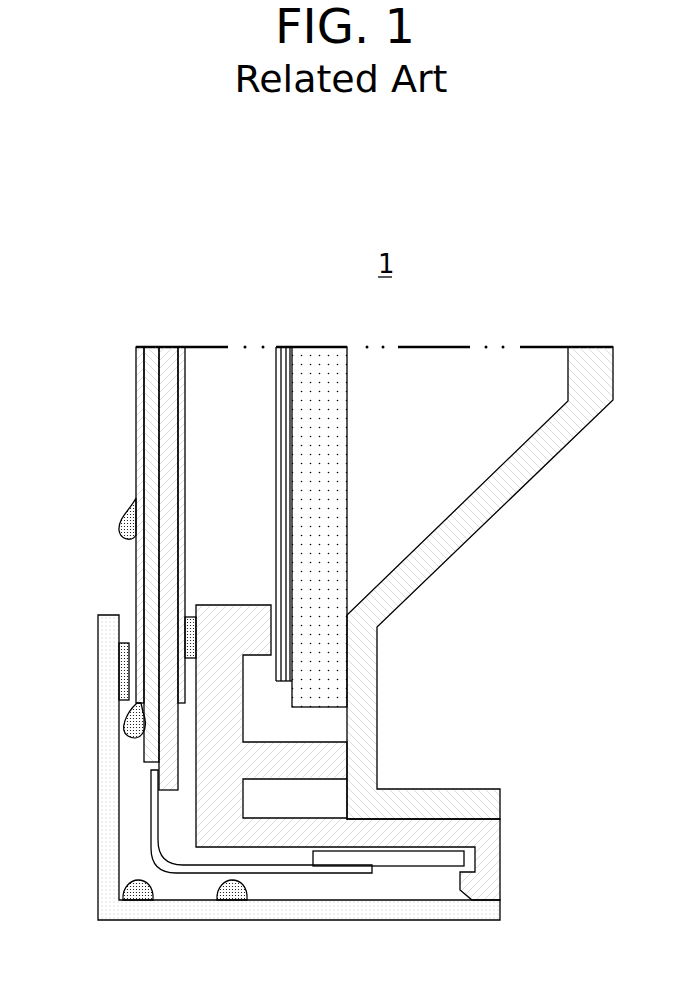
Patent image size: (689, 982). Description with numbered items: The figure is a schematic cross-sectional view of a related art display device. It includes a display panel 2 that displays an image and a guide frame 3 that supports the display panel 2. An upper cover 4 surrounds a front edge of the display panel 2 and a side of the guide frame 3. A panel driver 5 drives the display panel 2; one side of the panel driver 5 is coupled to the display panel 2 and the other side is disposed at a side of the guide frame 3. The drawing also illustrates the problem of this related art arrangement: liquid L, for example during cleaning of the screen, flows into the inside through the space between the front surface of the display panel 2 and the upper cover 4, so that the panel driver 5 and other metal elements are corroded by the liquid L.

The display panel 2 is at (170, 428).
The guide frame 3 is at (328, 758).
The upper cover 4 is at (112, 733).
The panel driver 5 is at (280, 868).
The liquid L is at (136, 893).